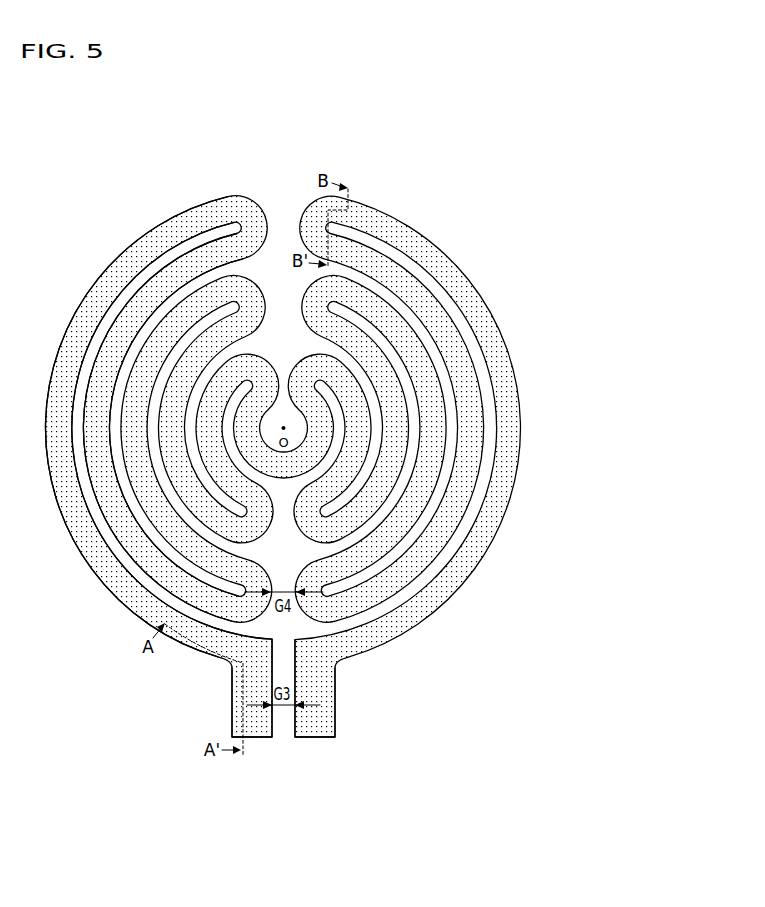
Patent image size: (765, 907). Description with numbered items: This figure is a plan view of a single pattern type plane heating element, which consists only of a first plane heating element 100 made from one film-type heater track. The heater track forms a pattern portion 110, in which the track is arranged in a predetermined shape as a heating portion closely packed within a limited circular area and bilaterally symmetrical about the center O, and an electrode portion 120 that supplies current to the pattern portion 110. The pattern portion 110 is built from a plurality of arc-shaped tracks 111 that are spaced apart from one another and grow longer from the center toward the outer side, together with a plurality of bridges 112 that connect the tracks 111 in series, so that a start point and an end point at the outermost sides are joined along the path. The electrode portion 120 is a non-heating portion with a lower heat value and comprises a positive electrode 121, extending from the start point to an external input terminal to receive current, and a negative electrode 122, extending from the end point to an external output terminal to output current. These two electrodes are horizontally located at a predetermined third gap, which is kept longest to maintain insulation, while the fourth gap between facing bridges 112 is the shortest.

The first plane heating element 100 is at (393, 197).
The pattern portion 110 is at (158, 382).
The arc-shaped tracks 111 is at (185, 213).
The bridges 112 is at (180, 138).
The electrode portion 120 is at (283, 728).
The positive electrode 121 is at (258, 739).
The negative electrode 122 is at (315, 711).